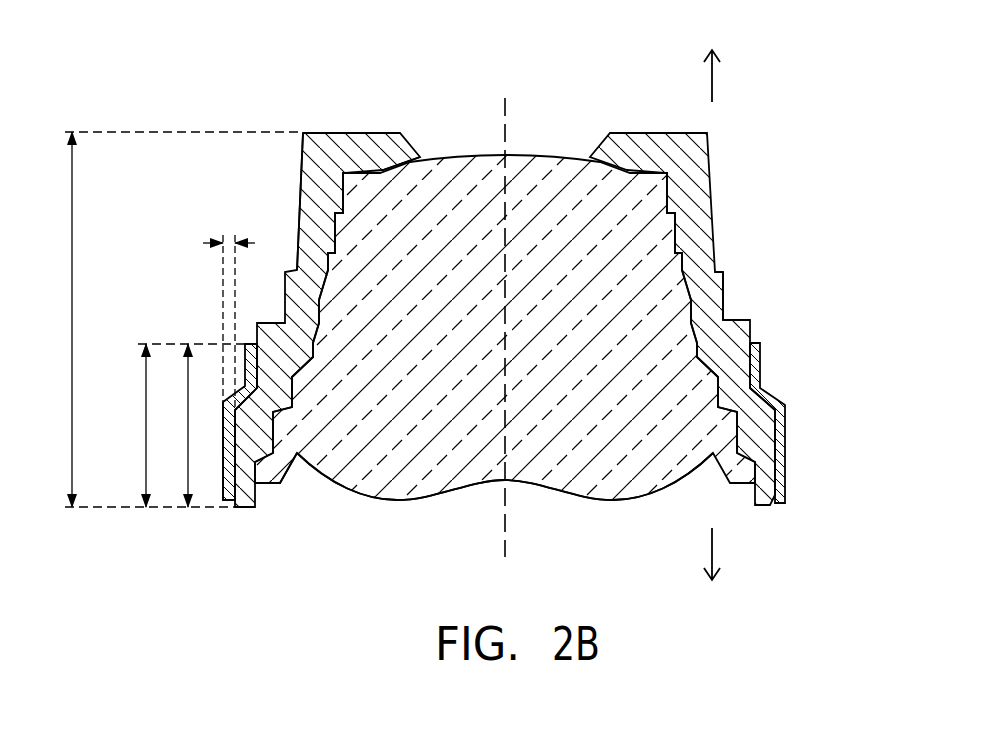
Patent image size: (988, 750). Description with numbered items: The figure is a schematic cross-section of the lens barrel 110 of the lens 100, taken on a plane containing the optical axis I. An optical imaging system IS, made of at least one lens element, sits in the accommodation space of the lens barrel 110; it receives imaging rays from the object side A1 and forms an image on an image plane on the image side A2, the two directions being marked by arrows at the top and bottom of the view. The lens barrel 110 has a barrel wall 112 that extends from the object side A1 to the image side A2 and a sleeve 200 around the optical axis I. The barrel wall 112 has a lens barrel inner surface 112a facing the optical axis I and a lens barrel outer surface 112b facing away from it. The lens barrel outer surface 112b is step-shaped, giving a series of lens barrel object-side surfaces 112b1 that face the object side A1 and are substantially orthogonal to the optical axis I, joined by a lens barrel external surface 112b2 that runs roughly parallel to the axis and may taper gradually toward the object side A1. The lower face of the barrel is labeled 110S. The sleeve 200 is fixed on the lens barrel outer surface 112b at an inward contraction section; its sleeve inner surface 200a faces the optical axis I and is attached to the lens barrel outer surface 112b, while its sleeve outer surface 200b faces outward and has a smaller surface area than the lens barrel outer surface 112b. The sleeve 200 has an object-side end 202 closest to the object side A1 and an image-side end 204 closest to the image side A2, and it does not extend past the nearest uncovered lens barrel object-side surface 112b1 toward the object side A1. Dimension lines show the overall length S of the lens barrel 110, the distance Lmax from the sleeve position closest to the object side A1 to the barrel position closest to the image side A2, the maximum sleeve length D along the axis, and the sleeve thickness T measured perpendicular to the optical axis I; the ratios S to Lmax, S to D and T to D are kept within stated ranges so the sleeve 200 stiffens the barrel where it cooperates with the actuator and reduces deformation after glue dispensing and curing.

The lens 100 is at (451, 317).
The lens barrel 110 is at (518, 324).
The barrel wall 112 is at (518, 293).
The lens barrel inner surface 112a is at (346, 186).
The lens barrel outer surface 112b is at (296, 188).
The lens barrel object-side surface 112b1 is at (740, 318).
The lens barrel external surface 112b2 is at (726, 279).
The bottom surface of lens element 110S is at (305, 488).
The sleeve 200 is at (502, 409).
The sleeve inner surface 200a is at (240, 433).
The sleeve outer surface 200b is at (215, 450).
The object-side end 202 is at (762, 341).
The image-side end 204 is at (784, 506).
The optical imaging system IS is at (620, 488).
The optical axis I is at (505, 307).
The object side A1 is at (713, 59).
The image side A2 is at (711, 573).
The overall length of the lens barrel S is at (170, 319).
The sleeve thickness T is at (229, 329).
The maximum length of the sleeve D is at (174, 425).
The distance between sleeve object-side position and lens barrel image-side position Lmax is at (164, 425).